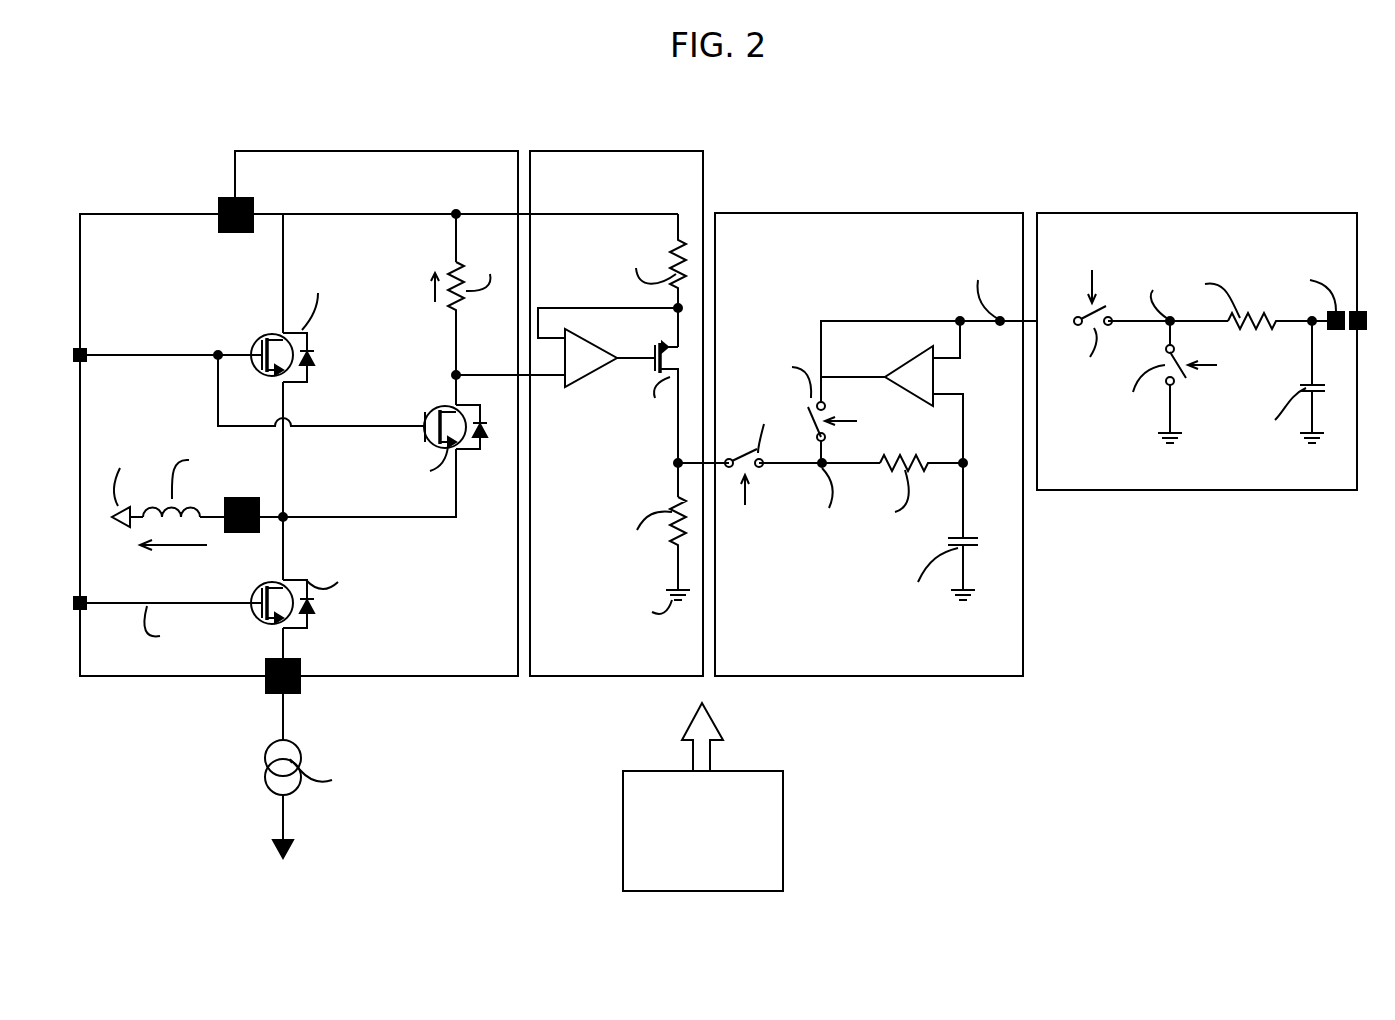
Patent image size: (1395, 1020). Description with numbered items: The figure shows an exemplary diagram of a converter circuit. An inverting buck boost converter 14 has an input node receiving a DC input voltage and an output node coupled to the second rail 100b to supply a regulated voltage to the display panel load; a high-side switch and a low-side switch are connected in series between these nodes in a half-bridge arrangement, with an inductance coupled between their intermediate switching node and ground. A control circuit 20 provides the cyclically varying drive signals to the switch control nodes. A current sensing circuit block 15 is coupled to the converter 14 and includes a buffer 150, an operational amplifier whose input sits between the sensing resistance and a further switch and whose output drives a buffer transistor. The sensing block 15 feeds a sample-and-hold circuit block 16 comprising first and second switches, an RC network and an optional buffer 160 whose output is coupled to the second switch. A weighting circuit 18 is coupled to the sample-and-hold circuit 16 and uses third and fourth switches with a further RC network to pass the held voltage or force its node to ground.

The inverting buck boost converter 14 is at (350, 151).
The current sensing circuit block 15 is at (593, 151).
The sample-and-hold circuit block 16 is at (852, 213).
The weighting circuit 18 is at (1197, 213).
The control circuit 20 is at (770, 837).
The second rail 100b is at (283, 820).
The buffer 150 is at (605, 382).
The buffer 160 is at (935, 370).